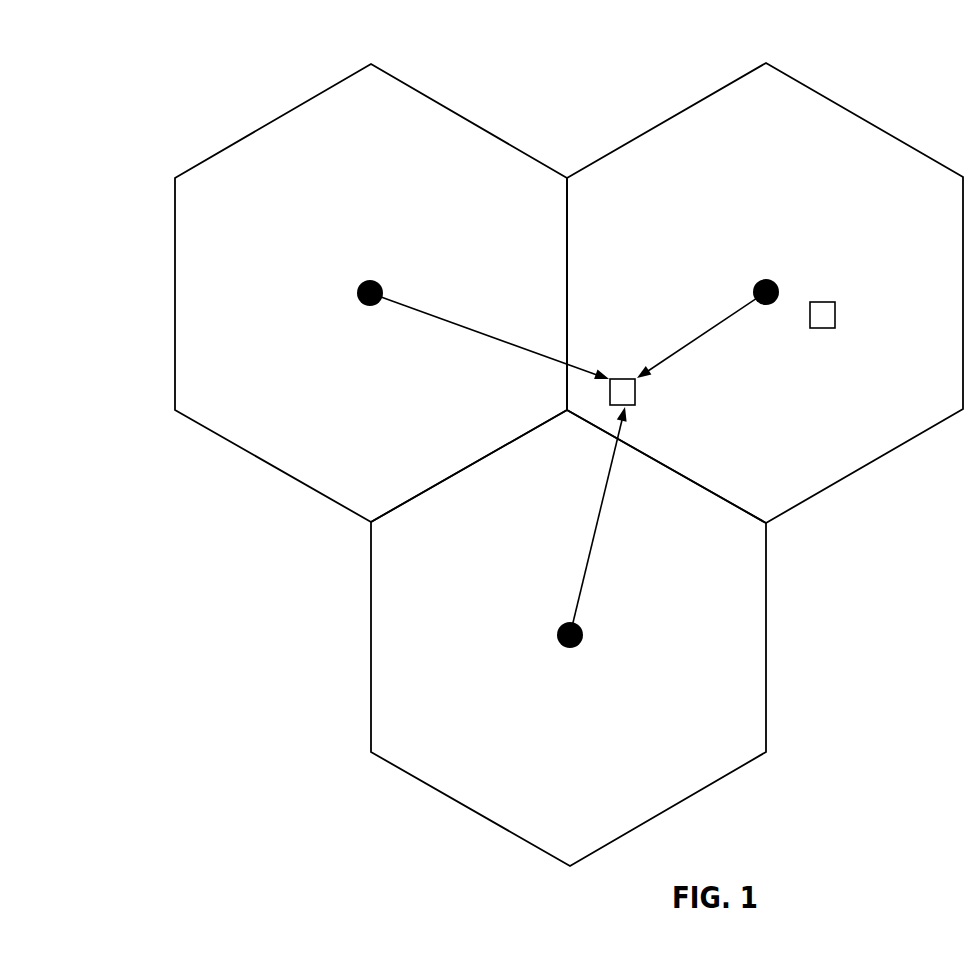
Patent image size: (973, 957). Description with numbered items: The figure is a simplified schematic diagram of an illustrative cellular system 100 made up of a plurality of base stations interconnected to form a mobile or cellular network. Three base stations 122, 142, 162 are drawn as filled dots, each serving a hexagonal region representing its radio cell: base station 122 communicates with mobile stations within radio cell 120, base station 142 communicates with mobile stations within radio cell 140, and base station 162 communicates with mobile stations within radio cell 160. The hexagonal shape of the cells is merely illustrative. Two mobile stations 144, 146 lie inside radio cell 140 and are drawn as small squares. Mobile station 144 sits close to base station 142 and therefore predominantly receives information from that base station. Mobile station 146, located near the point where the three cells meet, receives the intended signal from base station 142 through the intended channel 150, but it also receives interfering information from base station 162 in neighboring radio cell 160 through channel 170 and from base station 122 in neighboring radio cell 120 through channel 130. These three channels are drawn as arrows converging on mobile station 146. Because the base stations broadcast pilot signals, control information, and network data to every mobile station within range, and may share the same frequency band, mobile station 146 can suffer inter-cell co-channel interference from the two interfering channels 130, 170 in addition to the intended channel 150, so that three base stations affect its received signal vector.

The cellular system 100 is at (189, 66).
The radio cell 120 is at (466, 117).
The base station 122 is at (363, 282).
The channel 130 is at (448, 320).
The radio cell 140 is at (856, 114).
The base station 142 is at (761, 280).
The mobile station 144 is at (826, 302).
The mobile station 146 is at (638, 387).
The channel 150 is at (700, 338).
The radio cell 160 is at (767, 640).
The base station 162 is at (557, 628).
The channel 170 is at (586, 565).